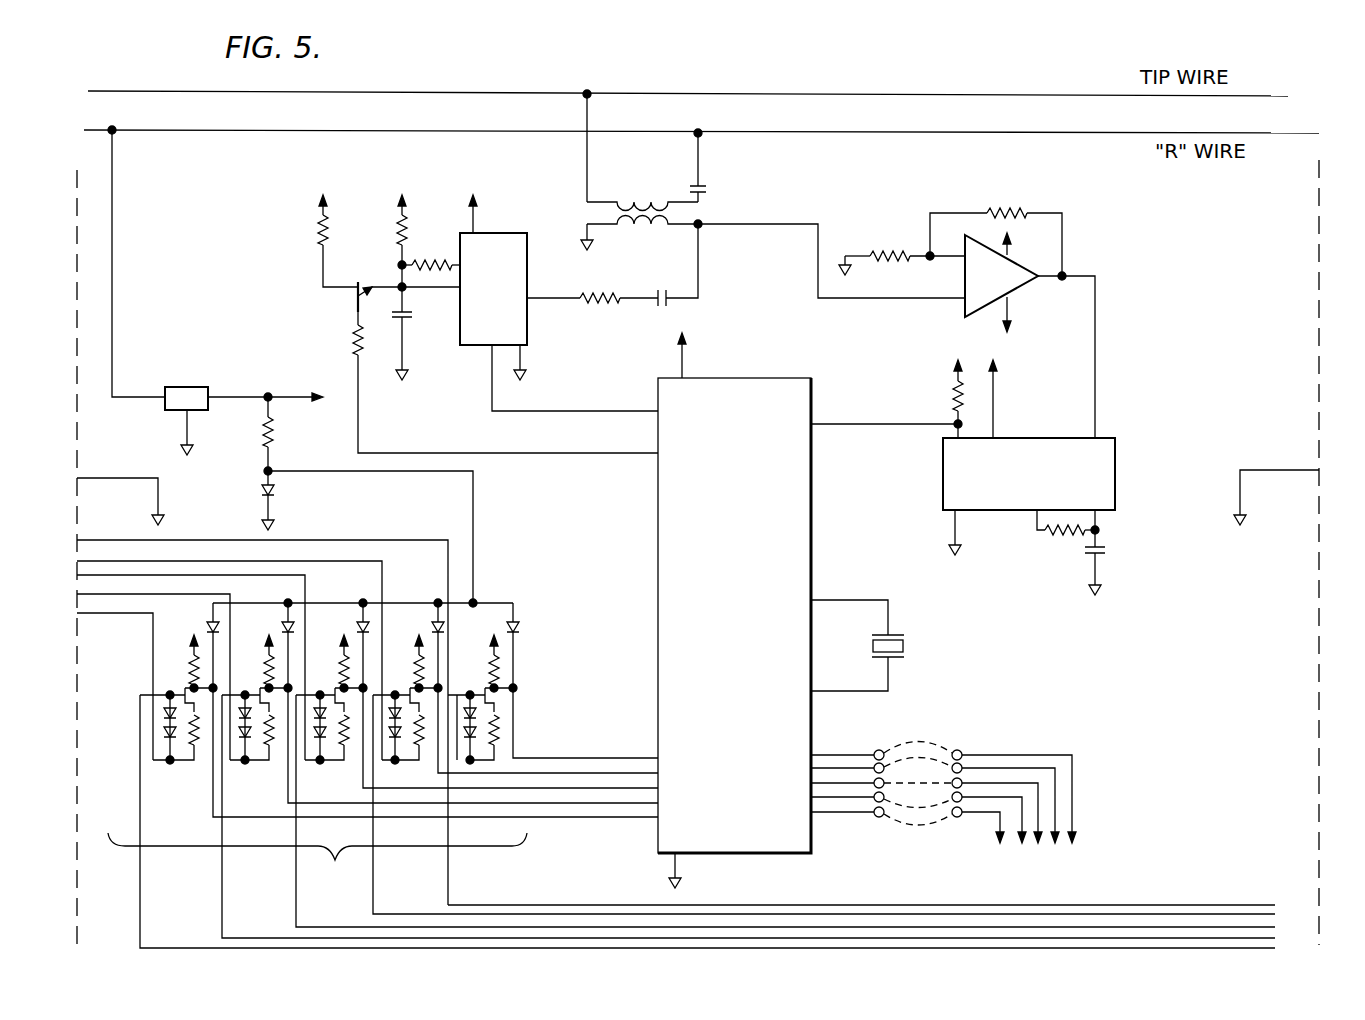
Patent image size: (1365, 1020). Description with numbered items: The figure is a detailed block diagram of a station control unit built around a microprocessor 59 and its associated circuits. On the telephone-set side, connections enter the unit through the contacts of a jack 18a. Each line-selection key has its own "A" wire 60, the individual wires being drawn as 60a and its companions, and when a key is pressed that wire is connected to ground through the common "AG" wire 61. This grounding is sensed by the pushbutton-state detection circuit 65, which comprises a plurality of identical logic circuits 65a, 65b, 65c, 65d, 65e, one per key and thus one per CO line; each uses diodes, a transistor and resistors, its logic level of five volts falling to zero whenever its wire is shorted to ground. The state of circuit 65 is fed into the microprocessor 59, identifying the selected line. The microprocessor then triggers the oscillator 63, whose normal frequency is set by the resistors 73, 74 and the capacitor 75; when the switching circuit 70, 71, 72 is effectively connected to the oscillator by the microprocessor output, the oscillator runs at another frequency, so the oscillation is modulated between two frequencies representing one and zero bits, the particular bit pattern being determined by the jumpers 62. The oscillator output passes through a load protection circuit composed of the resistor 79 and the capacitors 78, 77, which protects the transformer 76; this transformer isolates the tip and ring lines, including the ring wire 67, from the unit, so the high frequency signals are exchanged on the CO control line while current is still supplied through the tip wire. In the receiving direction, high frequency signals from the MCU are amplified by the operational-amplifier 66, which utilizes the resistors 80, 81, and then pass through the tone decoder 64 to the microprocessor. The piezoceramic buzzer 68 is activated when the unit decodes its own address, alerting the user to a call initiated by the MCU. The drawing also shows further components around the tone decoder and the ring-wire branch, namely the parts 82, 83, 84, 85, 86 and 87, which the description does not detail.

The microprocessor 59 is at (734, 610).
The wire 60 is at (1278, 903).
The input lines a-e 60a is at (262, 710).
The wire 61 is at (130, 477).
The jumpers 62 is at (972, 748).
The oscillator 63 is at (530, 303).
The tone decoder 64 is at (1029, 457).
The pushbutton-state detection circuit 65 is at (335, 860).
The logic circuit 65a is at (503, 748).
The logic circuit 65b is at (413, 755).
The logic circuit 65c is at (338, 755).
The logic circuit 65d is at (263, 757).
The logic circuit 65e is at (188, 757).
The operational-amplifier 66 is at (1030, 335).
The ring wire 67 is at (591, 94).
The piezoceramic buzzer 68 is at (905, 646).
The switching circuit 70 is at (318, 239).
The switching circuit 71 is at (348, 306).
The switching circuit 72 is at (354, 342).
The resistor 73 is at (408, 234).
The resistor 74 is at (433, 263).
The capacitor 75 is at (410, 320).
The transformer 76 is at (650, 200).
The capacitor 77 is at (708, 190).
The capacitor 78 is at (660, 310).
The resistor 79 is at (603, 296).
The resistor 80 is at (1005, 212).
The resistor 81 is at (895, 254).
The resistor 82 is at (955, 390).
The resistor 83 is at (1060, 531).
The capacitor 84 is at (1100, 549).
The relay/detector 85 is at (193, 387).
The resistor 86 is at (275, 441).
The diode 87 is at (275, 495).
The jack 18a is at (1340, 552).